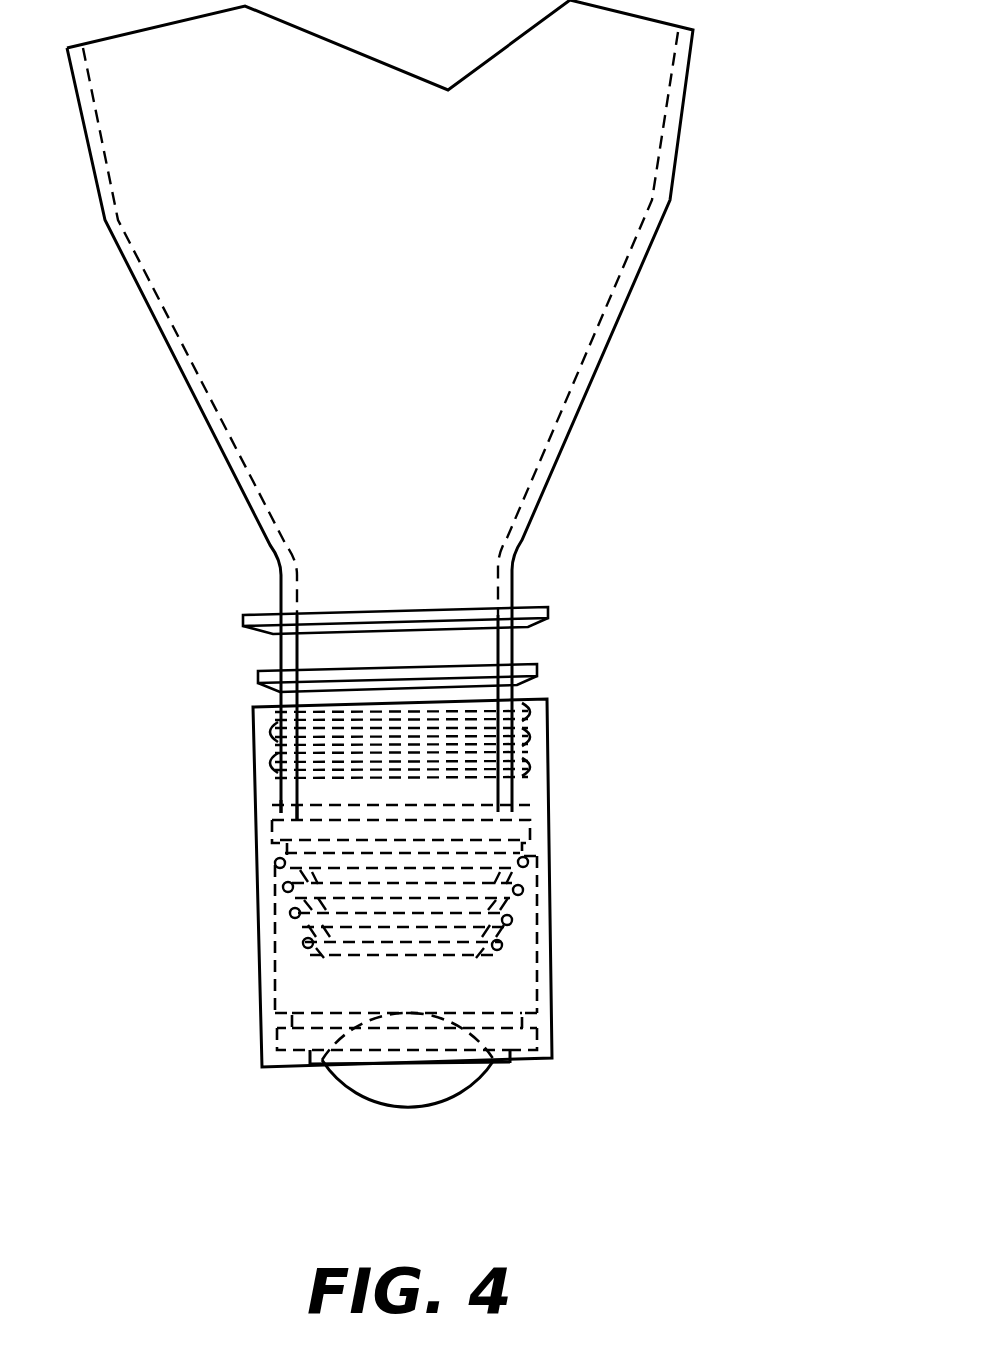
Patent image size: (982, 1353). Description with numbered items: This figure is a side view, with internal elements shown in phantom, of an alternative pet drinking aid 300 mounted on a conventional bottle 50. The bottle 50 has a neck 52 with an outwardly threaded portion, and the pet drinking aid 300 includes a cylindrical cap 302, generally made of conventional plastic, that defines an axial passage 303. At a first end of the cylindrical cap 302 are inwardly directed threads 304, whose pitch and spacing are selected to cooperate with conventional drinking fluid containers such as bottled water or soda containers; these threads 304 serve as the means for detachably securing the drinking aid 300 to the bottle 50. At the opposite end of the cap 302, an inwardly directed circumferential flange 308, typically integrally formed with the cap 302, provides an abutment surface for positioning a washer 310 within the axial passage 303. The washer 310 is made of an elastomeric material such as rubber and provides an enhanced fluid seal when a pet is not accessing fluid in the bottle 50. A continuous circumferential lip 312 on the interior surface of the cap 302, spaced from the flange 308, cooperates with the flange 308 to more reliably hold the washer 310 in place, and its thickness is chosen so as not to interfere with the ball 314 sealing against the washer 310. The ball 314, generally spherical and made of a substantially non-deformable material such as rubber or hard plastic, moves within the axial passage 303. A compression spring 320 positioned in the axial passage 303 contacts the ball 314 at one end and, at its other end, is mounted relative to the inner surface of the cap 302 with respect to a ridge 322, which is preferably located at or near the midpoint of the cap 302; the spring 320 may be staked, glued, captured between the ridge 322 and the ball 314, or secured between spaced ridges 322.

The bottle 50 is at (567, 278).
The neck 52 is at (310, 653).
The pet drinking aid 300 is at (582, 787).
The cylindrical cap 302 is at (548, 897).
The axial passage 303 is at (342, 786).
The inwardly directed threads 304 is at (543, 730).
The flange 308 is at (522, 1060).
The washer 310 is at (528, 1035).
The circumferential lip 312 is at (530, 1007).
The ball 314 is at (390, 1087).
The compression spring 320 is at (276, 948).
The ridge 322 is at (548, 840).